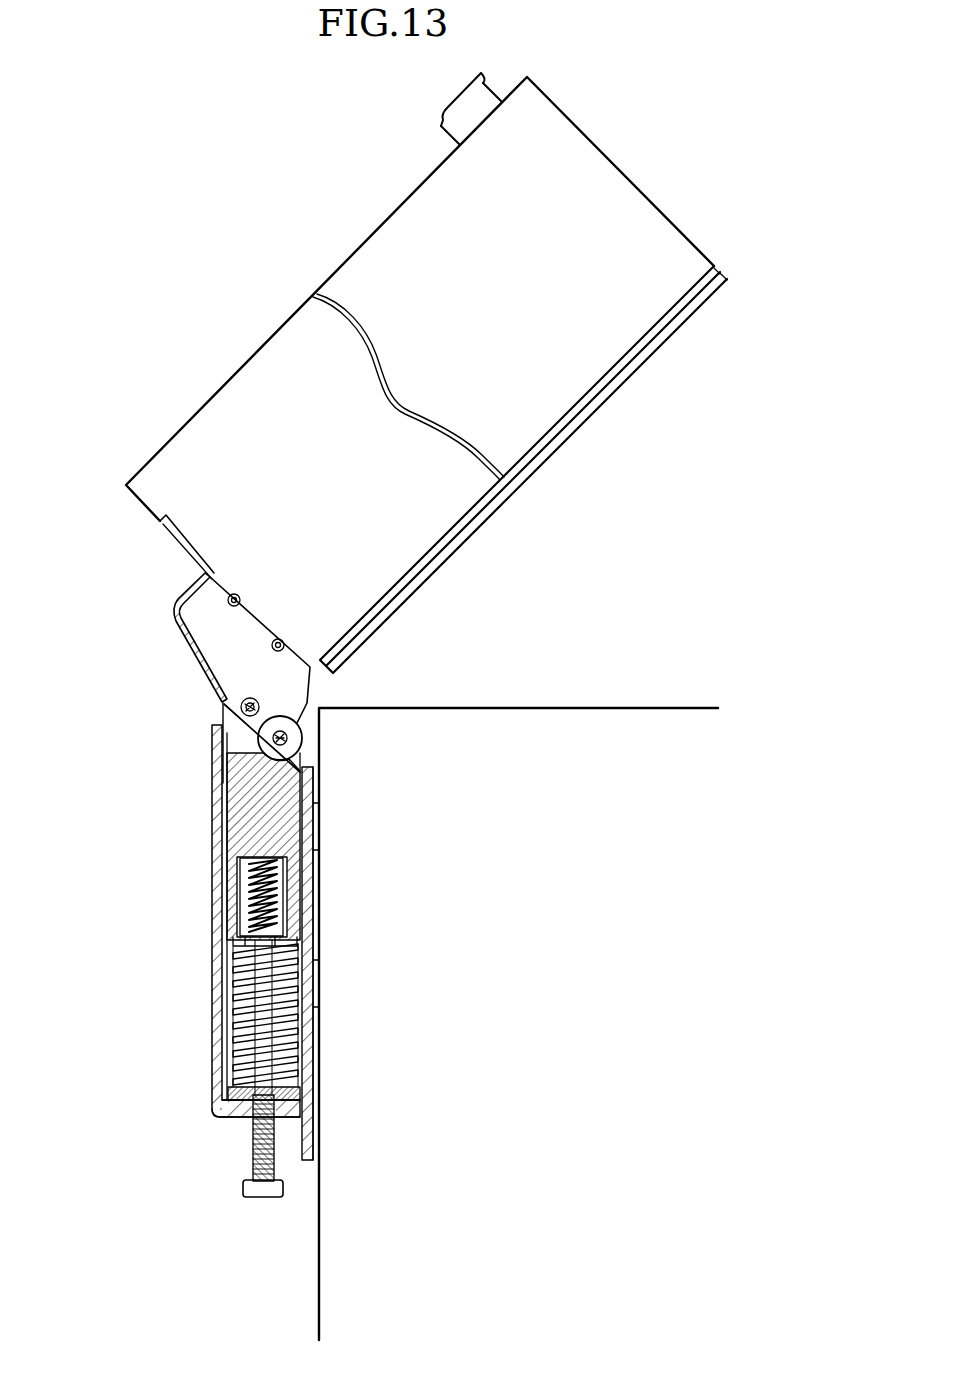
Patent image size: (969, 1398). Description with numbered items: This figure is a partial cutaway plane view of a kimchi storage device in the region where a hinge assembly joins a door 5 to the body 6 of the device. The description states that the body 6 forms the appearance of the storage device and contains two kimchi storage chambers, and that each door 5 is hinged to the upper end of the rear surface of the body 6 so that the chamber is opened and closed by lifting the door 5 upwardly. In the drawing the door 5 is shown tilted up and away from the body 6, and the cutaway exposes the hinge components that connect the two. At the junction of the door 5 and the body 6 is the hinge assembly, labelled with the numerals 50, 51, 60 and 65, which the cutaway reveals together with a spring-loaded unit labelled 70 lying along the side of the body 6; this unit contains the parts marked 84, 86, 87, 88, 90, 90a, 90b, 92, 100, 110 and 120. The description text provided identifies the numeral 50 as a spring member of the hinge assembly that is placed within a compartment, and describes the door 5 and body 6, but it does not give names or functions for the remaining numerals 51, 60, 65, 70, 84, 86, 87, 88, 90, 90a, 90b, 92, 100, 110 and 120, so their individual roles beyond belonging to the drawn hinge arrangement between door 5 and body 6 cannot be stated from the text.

The door 5 is at (216, 400).
The body 6 is at (523, 708).
The spring member 50 is at (137, 633).
The hinge bracket 51 is at (200, 660).
The hinge plate 60 is at (222, 705).
The hinge pin 65 is at (297, 723).
The door closing device 70 is at (173, 850).
The support block 84 is at (230, 1090).
The bottom plate 86 is at (218, 1113).
The spring holder 87 is at (238, 889).
The main spring 88 is at (232, 973).
The slider body 90 is at (232, 795).
The slider contact portion 90a is at (302, 754).
The housing wall 90b is at (222, 740).
The auxiliary spring 92 is at (240, 926).
The guide plate 100 is at (308, 1163).
The mounting rail 110 is at (318, 992).
The adjusting bolt 120 is at (260, 1190).